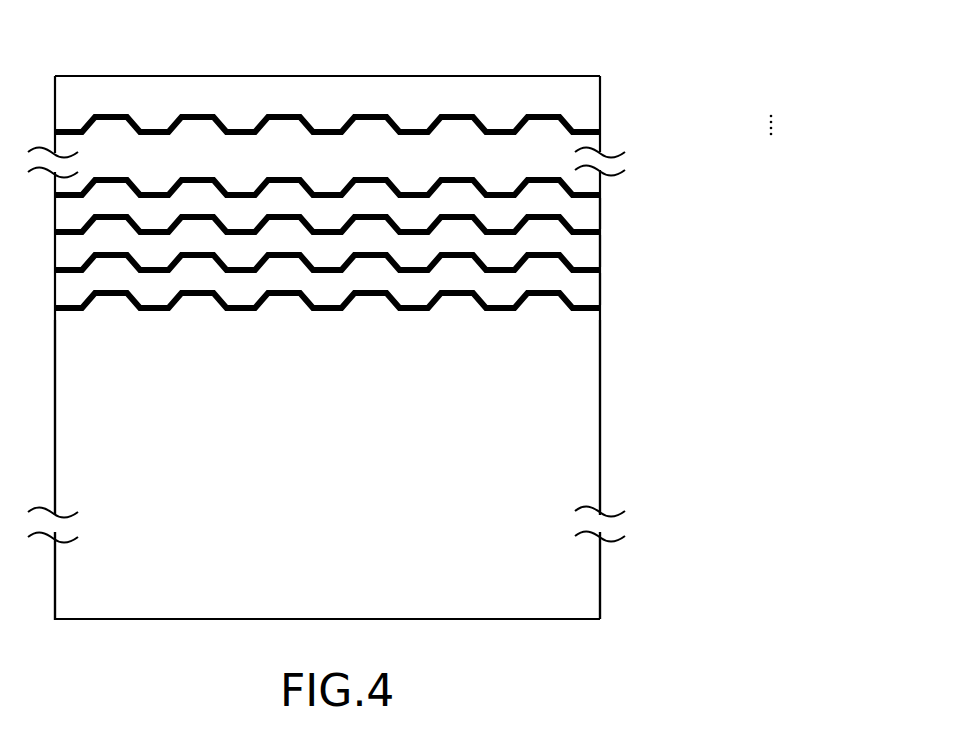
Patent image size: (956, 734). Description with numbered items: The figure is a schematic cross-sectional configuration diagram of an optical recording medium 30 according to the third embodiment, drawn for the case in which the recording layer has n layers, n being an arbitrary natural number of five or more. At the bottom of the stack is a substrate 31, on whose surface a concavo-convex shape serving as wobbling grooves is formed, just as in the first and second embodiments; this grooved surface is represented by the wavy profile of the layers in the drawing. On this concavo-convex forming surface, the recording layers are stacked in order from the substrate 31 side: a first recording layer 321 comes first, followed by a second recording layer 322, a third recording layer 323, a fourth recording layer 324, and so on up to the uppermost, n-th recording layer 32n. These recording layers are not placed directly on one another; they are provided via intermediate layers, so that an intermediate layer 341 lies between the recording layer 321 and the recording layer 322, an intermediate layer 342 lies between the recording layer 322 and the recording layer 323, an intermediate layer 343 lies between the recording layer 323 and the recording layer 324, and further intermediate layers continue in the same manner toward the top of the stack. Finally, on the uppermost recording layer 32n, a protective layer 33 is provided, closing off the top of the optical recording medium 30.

The optical recording medium 30 is at (657, 40).
The substrate 31 is at (568, 432).
The protective layer 33 is at (594, 97).
The recording layer (Ln) 32n is at (588, 128).
The recording layer (L3) 324 is at (595, 190).
The recording layer (L2) 323 is at (599, 224).
The recording layer (L1) 322 is at (580, 270).
The recording layer (L0) 321 is at (599, 297).
The intermediate layer 343 is at (592, 211).
The intermediate layer 342 is at (590, 248).
The intermediate layer 341 is at (578, 287).